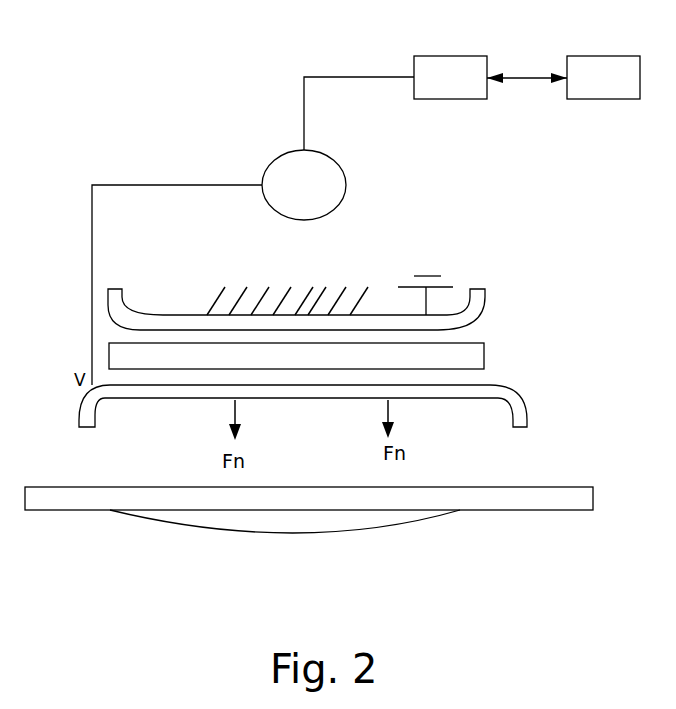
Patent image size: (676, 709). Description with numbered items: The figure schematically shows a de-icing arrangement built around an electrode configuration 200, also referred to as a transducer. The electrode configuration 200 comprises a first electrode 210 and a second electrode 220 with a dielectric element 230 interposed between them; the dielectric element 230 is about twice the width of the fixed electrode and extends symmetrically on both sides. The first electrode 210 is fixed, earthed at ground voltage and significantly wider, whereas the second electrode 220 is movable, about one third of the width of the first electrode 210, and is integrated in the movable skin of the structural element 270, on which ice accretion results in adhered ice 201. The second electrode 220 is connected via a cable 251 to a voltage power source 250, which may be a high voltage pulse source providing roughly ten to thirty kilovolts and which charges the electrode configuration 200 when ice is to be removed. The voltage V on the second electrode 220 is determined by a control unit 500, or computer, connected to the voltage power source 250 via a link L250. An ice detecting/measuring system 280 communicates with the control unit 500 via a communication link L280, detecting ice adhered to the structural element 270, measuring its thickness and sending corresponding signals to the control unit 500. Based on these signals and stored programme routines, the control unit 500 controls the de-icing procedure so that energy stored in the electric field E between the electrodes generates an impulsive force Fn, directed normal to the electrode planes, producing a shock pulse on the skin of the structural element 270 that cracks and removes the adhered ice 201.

The electrode configuration 200 is at (391, 196).
The adhered ice 201 is at (245, 530).
The first electrode 210 is at (186, 313).
The second electrode 220 is at (198, 403).
The dielectric element 230 is at (485, 351).
The voltage power source 250 is at (285, 195).
The cable 251 is at (92, 212).
The structural element 270 is at (484, 510).
The ice detecting/measuring system 280 is at (584, 88).
The control unit 500 is at (431, 88).
The link L250 is at (304, 86).
The communication link L280 is at (528, 78).